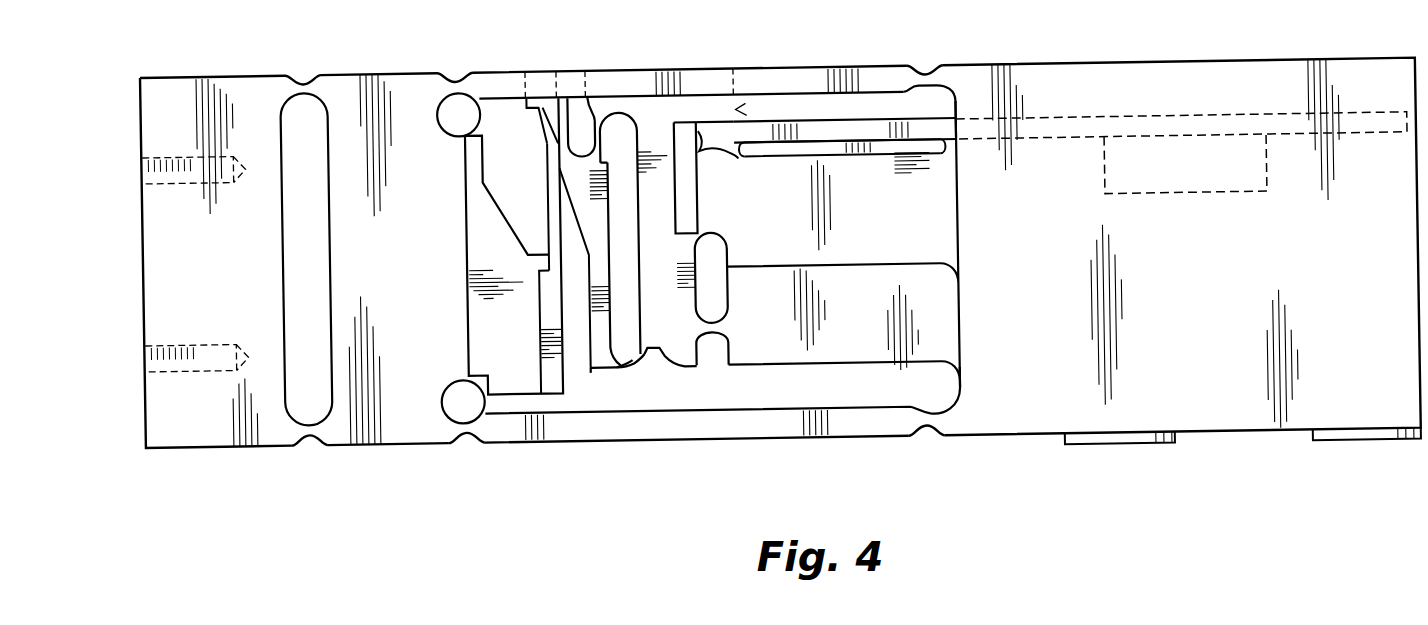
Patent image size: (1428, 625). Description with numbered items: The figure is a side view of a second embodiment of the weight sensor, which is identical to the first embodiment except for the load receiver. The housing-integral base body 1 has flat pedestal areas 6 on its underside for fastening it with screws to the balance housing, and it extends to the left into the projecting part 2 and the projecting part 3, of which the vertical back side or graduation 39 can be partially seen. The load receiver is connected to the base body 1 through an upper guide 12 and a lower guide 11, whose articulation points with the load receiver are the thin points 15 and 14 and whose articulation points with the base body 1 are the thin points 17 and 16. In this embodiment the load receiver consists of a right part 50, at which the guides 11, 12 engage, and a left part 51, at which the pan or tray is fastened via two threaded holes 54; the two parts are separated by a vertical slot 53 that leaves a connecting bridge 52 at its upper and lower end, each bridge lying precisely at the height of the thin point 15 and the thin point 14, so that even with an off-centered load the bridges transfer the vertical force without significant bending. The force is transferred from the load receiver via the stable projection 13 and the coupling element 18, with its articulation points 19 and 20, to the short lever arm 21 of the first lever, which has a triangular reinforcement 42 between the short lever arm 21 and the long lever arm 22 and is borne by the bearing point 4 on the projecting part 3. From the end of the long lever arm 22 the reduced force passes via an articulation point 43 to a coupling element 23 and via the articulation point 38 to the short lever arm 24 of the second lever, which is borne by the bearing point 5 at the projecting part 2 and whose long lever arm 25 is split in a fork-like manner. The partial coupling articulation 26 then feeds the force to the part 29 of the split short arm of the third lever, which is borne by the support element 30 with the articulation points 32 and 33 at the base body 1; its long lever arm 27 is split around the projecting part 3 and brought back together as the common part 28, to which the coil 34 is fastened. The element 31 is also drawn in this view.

The base body 1 is at (1223, 418).
The projecting part 2 is at (770, 372).
The projecting part 3 is at (628, 112).
The bearing point 4 is at (607, 108).
The bearing point 5 is at (715, 313).
The pedestal areas 6 is at (1107, 447).
The lower guide 11 is at (853, 420).
The upper guide 12 is at (865, 82).
The projection 13 is at (490, 338).
The articulation point 14 is at (467, 437).
The articulation point 15 is at (465, 80).
The articulation point 16 is at (927, 425).
The articulation point 17 is at (930, 82).
The coupling element 18 is at (547, 172).
The articulation point 19 is at (548, 240).
The articulation point 20 is at (543, 136).
The short lever arm 21 is at (546, 98).
The long lever arm 22 is at (600, 270).
The coupling element 23 is at (635, 370).
The short lever arm 24 is at (705, 360).
The long lever arm 25 is at (690, 217).
The partial coupling articulation 26 is at (713, 132).
The long lever arm 27 is at (812, 137).
The common part of long lever arm 28 is at (1141, 118).
The short lever arm 29 is at (717, 160).
The support element 30 is at (838, 153).
The slot end 31 is at (937, 158).
The articulation point 32 is at (753, 157).
The articulation point 33 is at (937, 157).
The coil 34 is at (1240, 178).
The articulation point 38 is at (663, 355).
The graduation 39 is at (737, 108).
The triangular reinforcement 42 is at (540, 118).
The articulation point 43 is at (627, 363).
The right part 50 is at (390, 445).
The left part 51 is at (164, 92).
The connecting bridge 52 is at (304, 85).
The vertical slot 53 is at (305, 270).
The threaded holes 54 is at (180, 165).